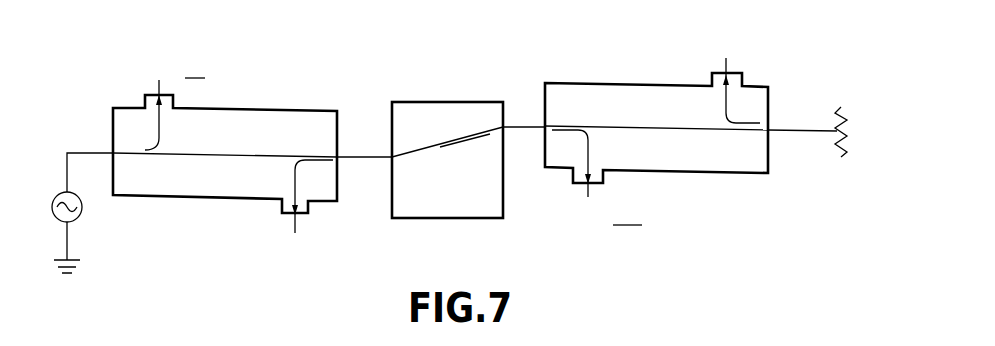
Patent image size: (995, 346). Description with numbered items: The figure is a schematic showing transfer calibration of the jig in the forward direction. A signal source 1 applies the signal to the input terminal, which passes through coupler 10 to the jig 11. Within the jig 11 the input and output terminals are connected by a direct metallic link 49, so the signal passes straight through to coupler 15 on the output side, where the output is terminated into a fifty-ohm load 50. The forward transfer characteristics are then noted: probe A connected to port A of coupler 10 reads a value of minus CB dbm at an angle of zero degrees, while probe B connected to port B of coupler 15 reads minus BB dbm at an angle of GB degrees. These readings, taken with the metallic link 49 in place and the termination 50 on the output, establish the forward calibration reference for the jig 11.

The signal source 1 is at (58, 193).
The coupler 10 is at (212, 192).
The jig 11 is at (455, 215).
The direct metallic link 49 is at (469, 130).
The coupler 15 is at (642, 87).
The 50 ohm termination 50 is at (863, 92).